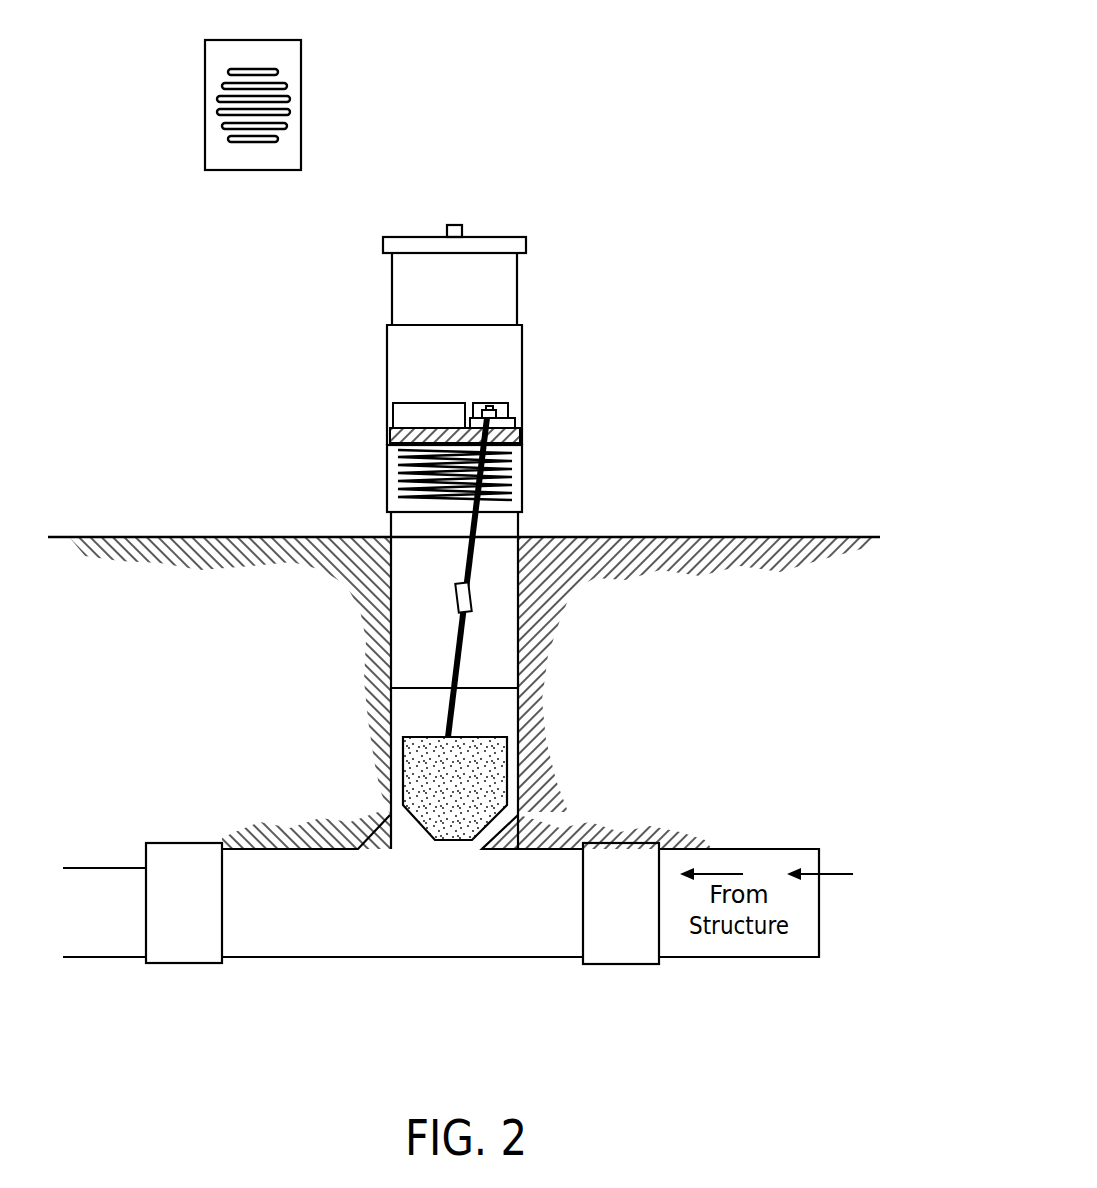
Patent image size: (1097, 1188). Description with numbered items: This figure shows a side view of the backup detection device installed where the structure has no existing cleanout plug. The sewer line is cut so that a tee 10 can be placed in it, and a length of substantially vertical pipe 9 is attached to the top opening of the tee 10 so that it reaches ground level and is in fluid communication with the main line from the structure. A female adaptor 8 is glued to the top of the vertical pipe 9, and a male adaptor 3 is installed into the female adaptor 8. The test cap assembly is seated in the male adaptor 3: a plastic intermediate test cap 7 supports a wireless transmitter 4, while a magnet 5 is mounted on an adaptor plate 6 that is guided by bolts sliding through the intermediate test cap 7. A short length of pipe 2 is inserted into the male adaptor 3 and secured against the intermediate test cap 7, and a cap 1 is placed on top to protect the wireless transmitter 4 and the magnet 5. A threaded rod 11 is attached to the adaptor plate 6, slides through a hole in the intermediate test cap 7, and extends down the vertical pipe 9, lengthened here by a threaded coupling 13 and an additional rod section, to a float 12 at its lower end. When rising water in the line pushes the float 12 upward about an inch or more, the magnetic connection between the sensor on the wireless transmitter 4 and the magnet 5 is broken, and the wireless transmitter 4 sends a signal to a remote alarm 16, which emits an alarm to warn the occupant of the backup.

The cap 1 is at (492, 237).
The pipe 2 is at (517, 290).
The male adaptor 3 is at (522, 347).
The wireless transmitter 4 is at (398, 415).
The magnet 5 is at (505, 410).
The adaptor plate 6 is at (515, 424).
The intermediate test cap 7 is at (391, 436).
The female adaptor 8 is at (520, 498).
The vertical pipe 9 is at (513, 626).
The tee 10 is at (565, 855).
The threaded rod 11 is at (462, 677).
The float 12 is at (410, 790).
The threaded coupling 13 is at (458, 598).
The remote alarm 16 is at (243, 40).